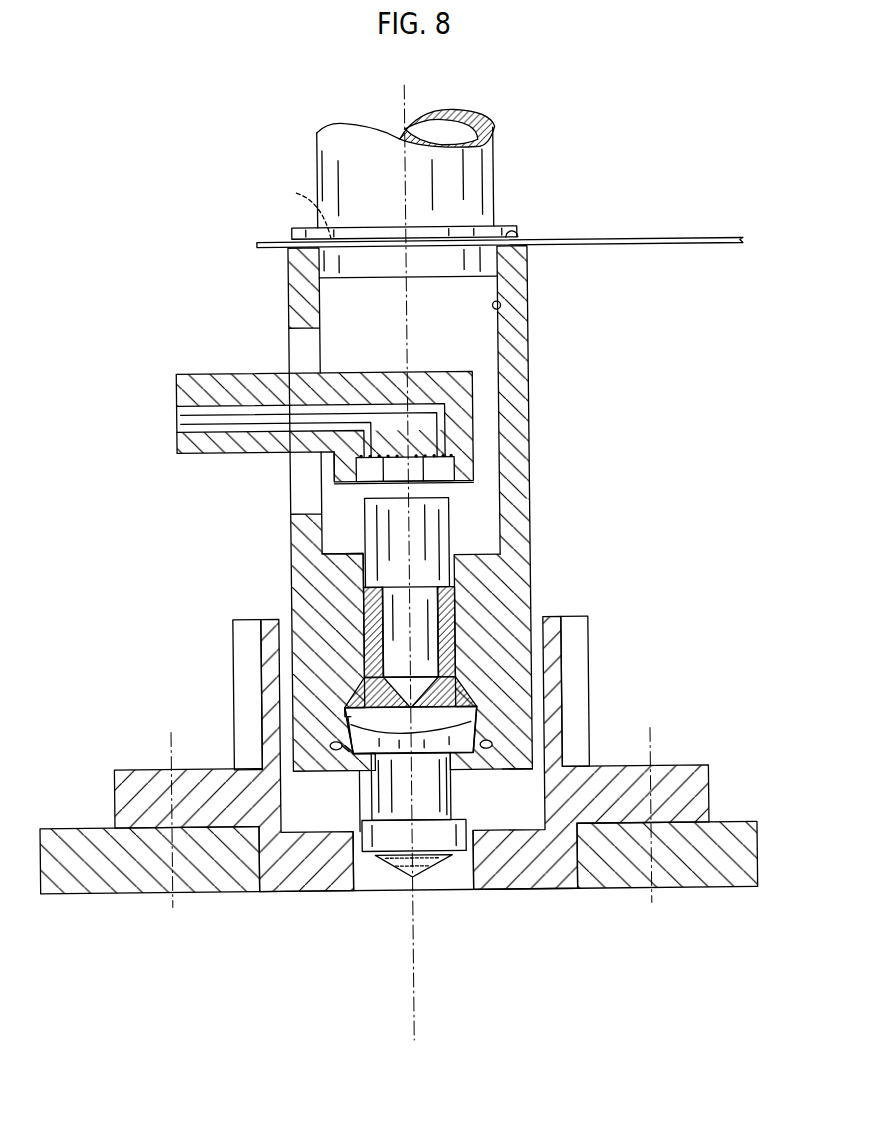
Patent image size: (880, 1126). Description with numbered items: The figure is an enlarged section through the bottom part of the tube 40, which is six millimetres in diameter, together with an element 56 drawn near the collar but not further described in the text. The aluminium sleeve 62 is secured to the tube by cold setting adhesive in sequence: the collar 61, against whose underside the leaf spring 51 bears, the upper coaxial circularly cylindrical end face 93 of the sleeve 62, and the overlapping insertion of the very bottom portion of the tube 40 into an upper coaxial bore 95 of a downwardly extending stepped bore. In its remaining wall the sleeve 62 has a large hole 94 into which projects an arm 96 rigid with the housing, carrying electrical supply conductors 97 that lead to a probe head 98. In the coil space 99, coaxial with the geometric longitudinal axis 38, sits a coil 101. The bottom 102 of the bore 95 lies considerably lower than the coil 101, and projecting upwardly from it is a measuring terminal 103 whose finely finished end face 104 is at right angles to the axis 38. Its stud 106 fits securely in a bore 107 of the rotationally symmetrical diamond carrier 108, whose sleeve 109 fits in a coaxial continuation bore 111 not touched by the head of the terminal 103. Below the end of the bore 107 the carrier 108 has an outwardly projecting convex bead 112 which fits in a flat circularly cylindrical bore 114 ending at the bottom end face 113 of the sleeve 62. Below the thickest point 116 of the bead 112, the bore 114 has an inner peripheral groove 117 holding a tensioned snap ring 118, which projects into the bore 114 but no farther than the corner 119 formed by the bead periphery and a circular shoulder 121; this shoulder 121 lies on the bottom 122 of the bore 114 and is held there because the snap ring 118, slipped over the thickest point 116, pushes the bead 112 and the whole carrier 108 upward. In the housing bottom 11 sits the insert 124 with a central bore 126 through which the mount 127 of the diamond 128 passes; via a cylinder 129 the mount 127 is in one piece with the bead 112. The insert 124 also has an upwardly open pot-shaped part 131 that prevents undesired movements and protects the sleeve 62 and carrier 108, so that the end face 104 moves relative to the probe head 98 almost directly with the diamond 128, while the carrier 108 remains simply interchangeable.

The housing bottom 11 is at (707, 880).
The geometric longitudinal axis 38 is at (413, 990).
The tube 40 is at (501, 162).
The leaf spring 51 is at (658, 240).
The spring 56 is at (302, 206).
The collar 61 is at (376, 235).
The sleeve 62 is at (534, 373).
The end face 93 is at (521, 230).
The hole 94 is at (300, 486).
The bore 95 is at (506, 309).
The arm 96 is at (218, 372).
The electrical supply conductors 97 is at (183, 421).
The probe head 98 is at (462, 460).
The coil space 99 is at (445, 483).
The coil 101 is at (375, 475).
The bottom 102 is at (480, 553).
The measuring terminal 103 is at (345, 541).
The end face 104 is at (456, 497).
The stud 106 is at (420, 603).
The bore 107 is at (435, 676).
The diamond carrier 108 is at (367, 645).
The sleeve 109 is at (452, 640).
The continuation bore 111 is at (330, 600).
The bead 112 is at (493, 745).
The bottom end face 113 is at (518, 770).
The bore 114 is at (356, 764).
The thickest point 116 is at (348, 730).
The inner peripheral groove 117 is at (331, 745).
The snap ring 118 is at (338, 755).
The corner 119 is at (350, 707).
The circular shoulder 121 is at (478, 709).
The bottom 122 is at (476, 727).
The insert 124 is at (130, 798).
The central bore 126 is at (471, 882).
The mount 127 is at (432, 845).
The diamond 128 is at (407, 878).
The cylinder 129 is at (430, 793).
The pot-shaped part 131 is at (552, 620).